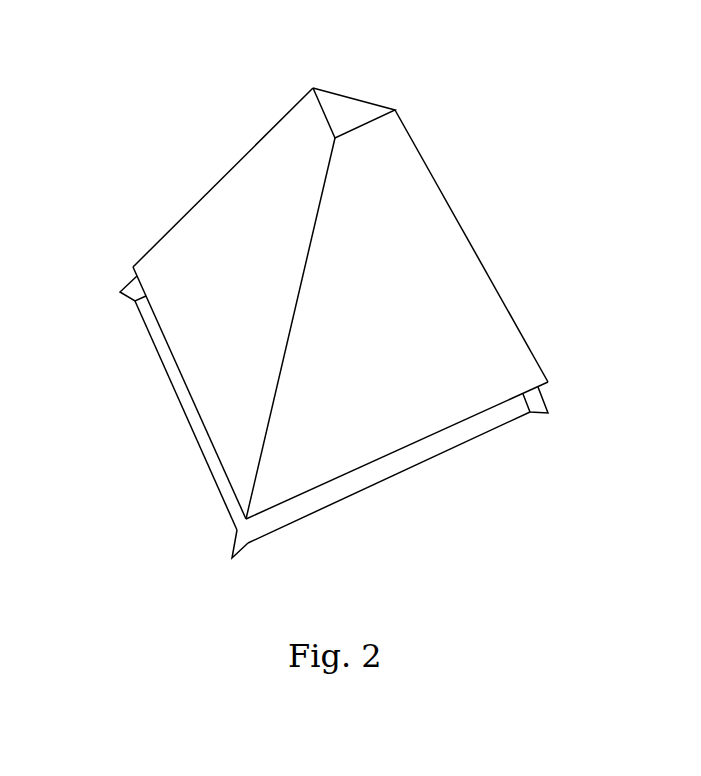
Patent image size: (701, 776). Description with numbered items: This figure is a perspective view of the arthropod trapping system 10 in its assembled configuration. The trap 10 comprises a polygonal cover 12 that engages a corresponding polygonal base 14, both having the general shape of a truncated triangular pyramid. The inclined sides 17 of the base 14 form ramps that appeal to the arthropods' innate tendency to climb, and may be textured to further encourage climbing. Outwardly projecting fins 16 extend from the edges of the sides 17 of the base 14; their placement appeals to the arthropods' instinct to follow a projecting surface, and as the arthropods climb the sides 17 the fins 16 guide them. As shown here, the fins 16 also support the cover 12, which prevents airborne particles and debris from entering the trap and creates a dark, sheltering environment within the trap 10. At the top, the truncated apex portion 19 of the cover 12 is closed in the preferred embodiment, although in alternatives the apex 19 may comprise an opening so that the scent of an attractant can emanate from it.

The terrestrial arthropod trapping system 10 is at (150, 95).
The polygonal cover 12 is at (397, 265).
The polygonal base 14 is at (142, 348).
The fins 16 is at (132, 282).
The sides 17 is at (193, 423).
The truncated apex portion 19 is at (353, 98).